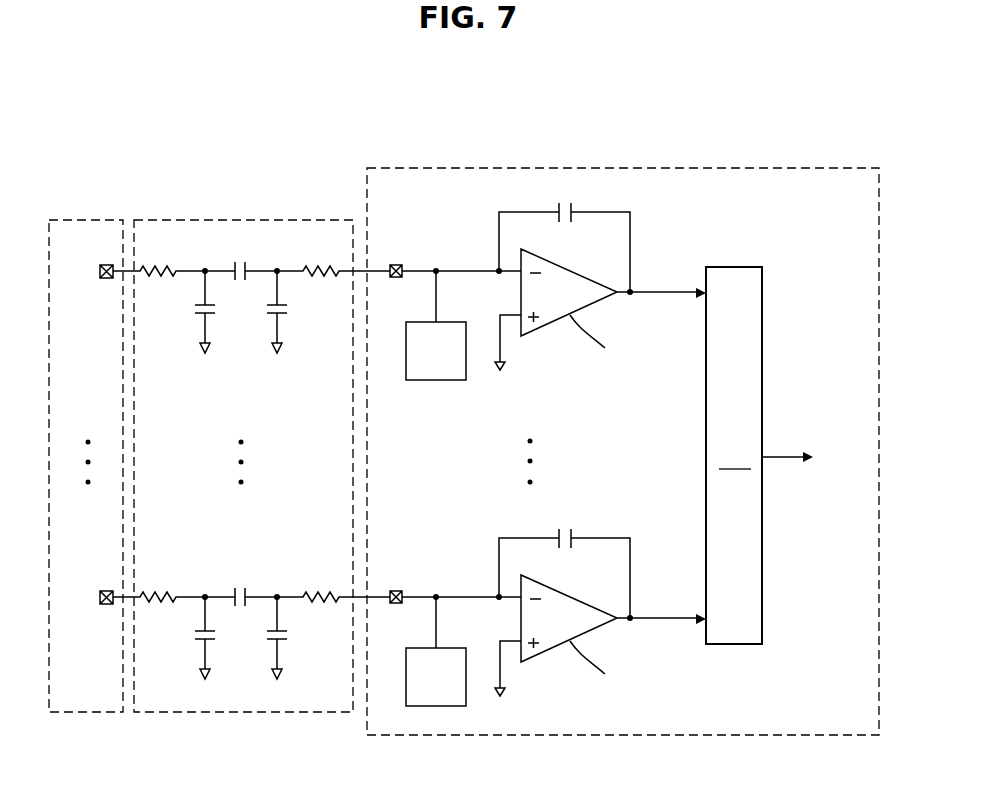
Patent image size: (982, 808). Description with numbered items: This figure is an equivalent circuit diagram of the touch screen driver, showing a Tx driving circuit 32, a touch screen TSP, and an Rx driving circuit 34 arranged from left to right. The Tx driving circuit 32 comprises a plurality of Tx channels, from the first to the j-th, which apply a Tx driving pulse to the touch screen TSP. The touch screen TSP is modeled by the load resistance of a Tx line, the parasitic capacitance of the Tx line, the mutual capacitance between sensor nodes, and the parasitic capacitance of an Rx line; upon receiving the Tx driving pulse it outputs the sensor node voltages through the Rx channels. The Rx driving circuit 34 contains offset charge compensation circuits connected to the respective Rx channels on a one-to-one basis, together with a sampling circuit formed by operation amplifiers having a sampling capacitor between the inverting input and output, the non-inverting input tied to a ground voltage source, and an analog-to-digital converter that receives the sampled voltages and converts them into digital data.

The Tx driving circuit 32 is at (86, 220).
The touch screen TSP is at (243, 220).
The Rx driving circuit 34 is at (622, 168).